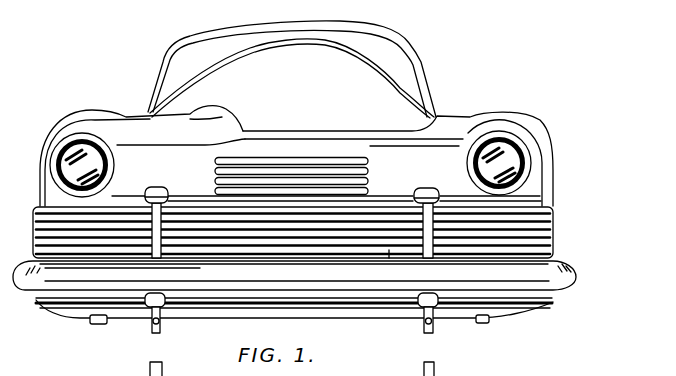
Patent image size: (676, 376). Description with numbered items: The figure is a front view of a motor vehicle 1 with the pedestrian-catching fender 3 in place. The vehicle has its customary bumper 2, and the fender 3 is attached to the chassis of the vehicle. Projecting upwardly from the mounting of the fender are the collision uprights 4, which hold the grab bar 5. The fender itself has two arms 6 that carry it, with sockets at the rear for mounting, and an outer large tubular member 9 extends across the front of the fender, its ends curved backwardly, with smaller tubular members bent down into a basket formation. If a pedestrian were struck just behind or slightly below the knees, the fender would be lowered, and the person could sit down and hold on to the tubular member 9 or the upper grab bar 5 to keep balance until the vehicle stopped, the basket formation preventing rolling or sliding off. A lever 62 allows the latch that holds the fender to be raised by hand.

The motor vehicle 1 is at (458, 112).
The bumper 2 is at (574, 283).
The fender 3 is at (553, 305).
The collision uprights 4 is at (420, 219).
The grab bar 5 is at (149, 144).
The arms 6 is at (150, 333).
The outer large tubular member 9 is at (373, 300).
The lever 62 is at (376, 250).